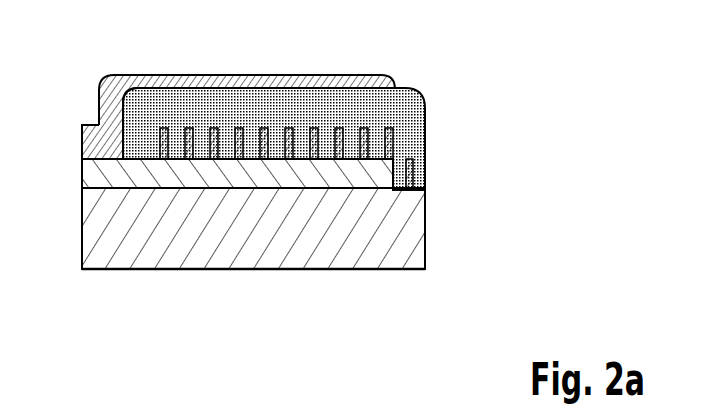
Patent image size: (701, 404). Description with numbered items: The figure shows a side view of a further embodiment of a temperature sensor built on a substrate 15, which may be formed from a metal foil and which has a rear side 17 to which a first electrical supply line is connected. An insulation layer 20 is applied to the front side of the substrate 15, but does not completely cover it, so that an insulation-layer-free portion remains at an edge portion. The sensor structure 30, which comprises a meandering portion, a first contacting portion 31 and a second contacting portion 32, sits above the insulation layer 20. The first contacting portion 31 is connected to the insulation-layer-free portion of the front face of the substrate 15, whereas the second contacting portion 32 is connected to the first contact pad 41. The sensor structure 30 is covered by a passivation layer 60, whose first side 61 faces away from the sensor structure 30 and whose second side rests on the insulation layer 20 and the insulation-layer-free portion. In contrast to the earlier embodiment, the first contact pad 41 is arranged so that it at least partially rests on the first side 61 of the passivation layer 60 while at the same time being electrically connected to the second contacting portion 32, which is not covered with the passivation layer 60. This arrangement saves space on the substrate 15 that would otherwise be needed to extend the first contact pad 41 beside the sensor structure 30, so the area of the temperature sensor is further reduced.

The substrate 15 is at (100, 240).
The rear side of the substrate 17 is at (253, 270).
The insulation layer 20 is at (100, 177).
The sensor structure 30 is at (317, 116).
The first contacting portion 31 is at (408, 172).
The second contacting portion 32 is at (100, 140).
The first contact pad 41 is at (171, 75).
The passivation layer 60 is at (418, 117).
The first side of the passivation layer 61 is at (218, 88).